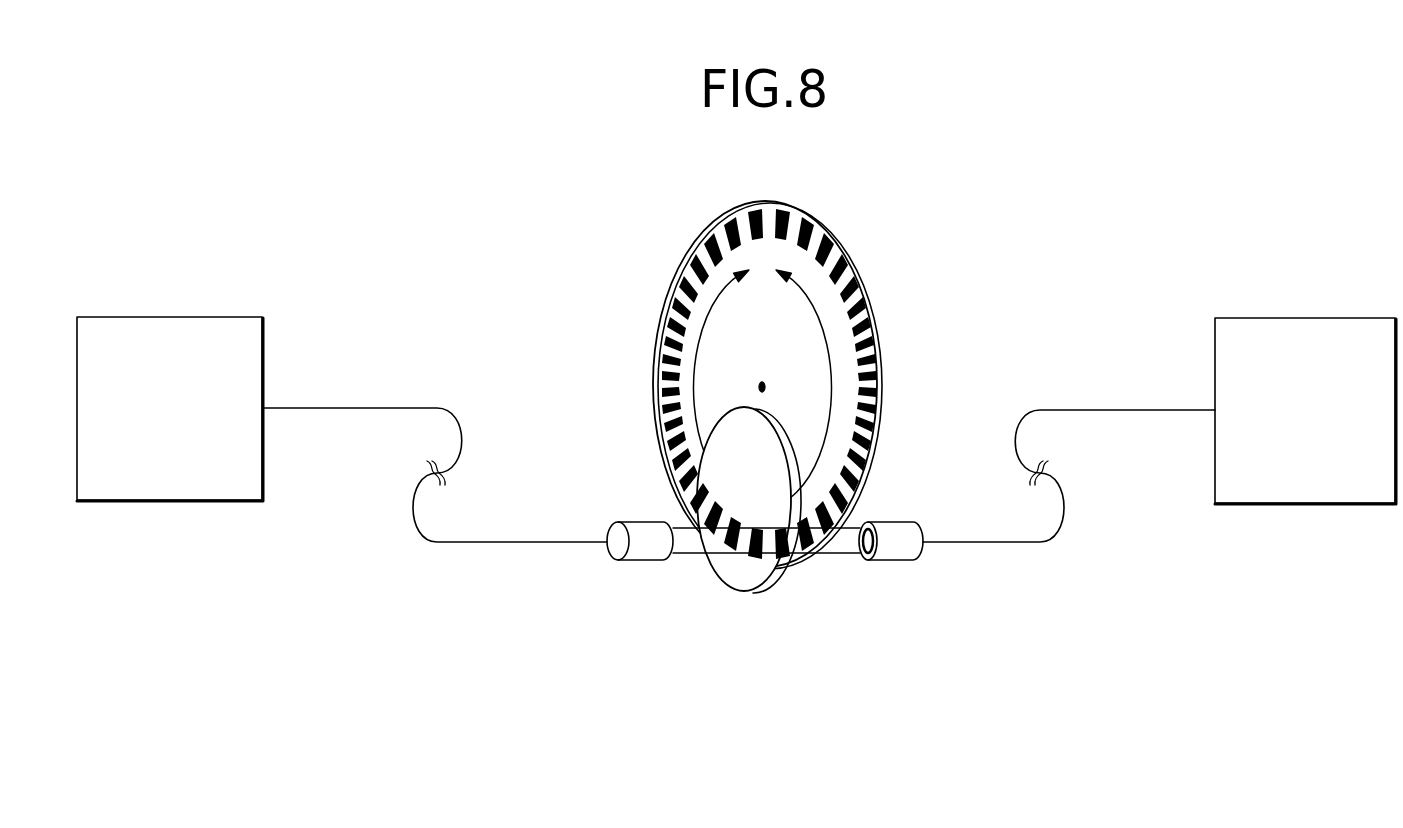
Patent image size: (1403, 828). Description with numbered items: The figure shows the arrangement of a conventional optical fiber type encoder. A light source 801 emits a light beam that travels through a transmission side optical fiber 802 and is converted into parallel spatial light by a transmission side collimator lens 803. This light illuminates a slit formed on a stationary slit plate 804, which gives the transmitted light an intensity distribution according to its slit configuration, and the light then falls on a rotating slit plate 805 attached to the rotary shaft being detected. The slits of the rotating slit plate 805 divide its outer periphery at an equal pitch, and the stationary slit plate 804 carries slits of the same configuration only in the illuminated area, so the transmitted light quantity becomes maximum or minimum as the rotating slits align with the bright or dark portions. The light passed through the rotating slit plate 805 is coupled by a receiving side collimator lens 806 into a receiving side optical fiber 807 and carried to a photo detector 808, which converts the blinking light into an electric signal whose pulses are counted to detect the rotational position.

The light source 801 is at (173, 317).
The transmission side optical fiber 802 is at (366, 408).
The transmission side collimator lens 803 is at (640, 562).
The stationary slit plate 804 is at (745, 592).
The rotating slit plate 805 is at (825, 215).
The receiving side collimator lens 806 is at (890, 562).
The receiving side optical fiber 807 is at (1075, 408).
The photo detector 808 is at (1307, 318).